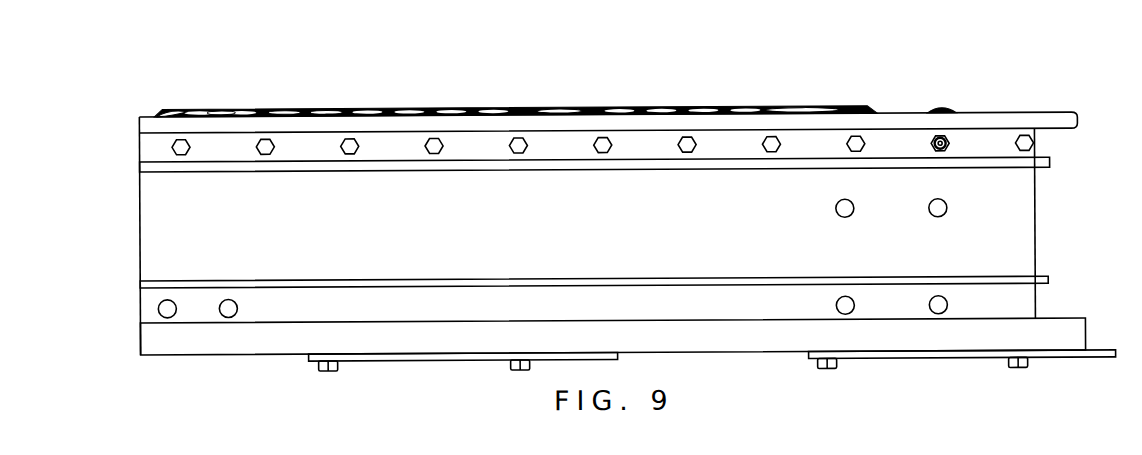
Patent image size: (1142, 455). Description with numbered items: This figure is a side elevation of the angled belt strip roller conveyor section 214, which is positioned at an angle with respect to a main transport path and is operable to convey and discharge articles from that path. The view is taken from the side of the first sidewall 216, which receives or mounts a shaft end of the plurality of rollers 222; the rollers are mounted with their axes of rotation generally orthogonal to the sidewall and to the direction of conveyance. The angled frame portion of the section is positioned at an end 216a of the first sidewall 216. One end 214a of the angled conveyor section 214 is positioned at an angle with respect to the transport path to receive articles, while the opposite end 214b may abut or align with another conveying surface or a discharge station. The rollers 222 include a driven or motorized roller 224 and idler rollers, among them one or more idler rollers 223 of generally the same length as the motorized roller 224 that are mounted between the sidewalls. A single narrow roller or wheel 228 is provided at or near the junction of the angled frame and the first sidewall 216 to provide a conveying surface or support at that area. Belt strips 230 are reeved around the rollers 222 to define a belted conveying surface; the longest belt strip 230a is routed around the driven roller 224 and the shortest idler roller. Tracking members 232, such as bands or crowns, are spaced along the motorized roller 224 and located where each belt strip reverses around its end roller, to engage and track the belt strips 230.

The angled discharge conveyor section 214 is at (273, 388).
The end of angled conveyor section 214a is at (1002, 242).
The opposite end of angled conveyor section 214b is at (150, 249).
The first sidewall 216 is at (565, 251).
The end of first sidewall 216a is at (1023, 262).
The rollers 222 is at (515, 85).
The idler rollers 223 is at (337, 112).
The motorized roller 224 is at (177, 112).
The narrow roller 228 is at (943, 113).
The belt strips 230 is at (565, 103).
The longest belt strip 230a is at (810, 112).
The tracking members 232 is at (218, 112).